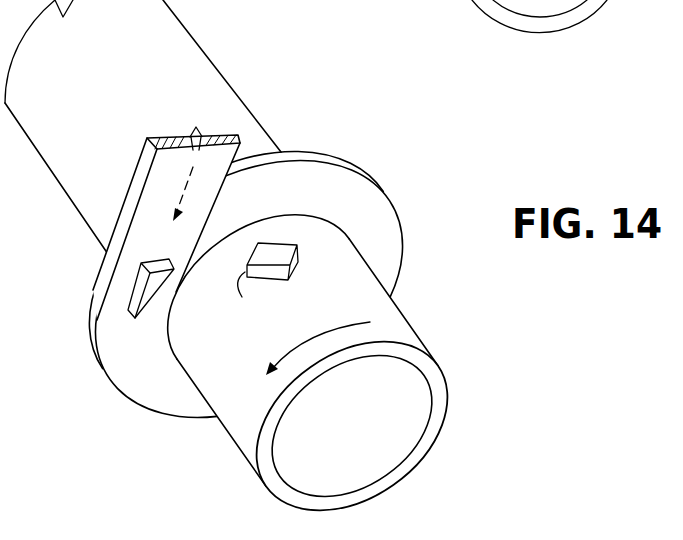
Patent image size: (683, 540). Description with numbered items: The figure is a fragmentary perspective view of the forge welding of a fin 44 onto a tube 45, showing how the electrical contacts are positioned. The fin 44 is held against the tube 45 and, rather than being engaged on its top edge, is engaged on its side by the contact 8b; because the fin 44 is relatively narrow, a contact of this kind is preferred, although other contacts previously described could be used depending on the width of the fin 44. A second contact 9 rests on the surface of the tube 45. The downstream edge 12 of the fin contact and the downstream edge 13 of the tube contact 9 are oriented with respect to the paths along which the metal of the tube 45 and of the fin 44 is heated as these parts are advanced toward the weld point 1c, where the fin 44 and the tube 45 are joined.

The weld point 1c is at (168, 320).
The fin 44 is at (125, 213).
The tube 45 is at (383, 305).
The contact 8b is at (133, 295).
The contact 9 is at (285, 257).
The downstream edge 12 is at (153, 291).
The downstream edge 13 is at (257, 292).